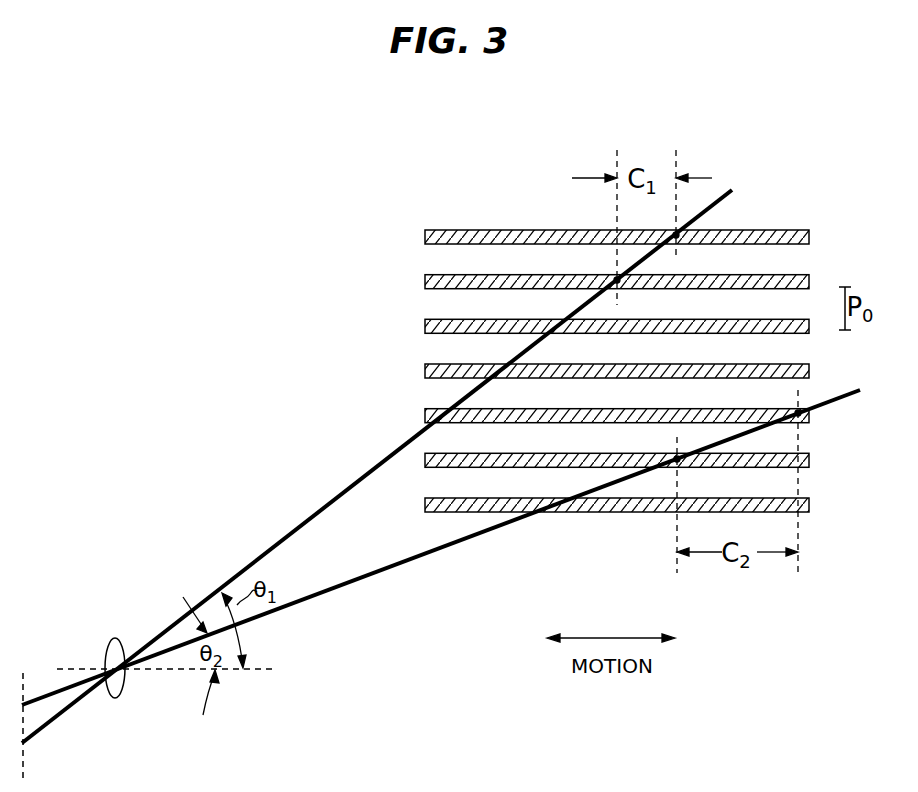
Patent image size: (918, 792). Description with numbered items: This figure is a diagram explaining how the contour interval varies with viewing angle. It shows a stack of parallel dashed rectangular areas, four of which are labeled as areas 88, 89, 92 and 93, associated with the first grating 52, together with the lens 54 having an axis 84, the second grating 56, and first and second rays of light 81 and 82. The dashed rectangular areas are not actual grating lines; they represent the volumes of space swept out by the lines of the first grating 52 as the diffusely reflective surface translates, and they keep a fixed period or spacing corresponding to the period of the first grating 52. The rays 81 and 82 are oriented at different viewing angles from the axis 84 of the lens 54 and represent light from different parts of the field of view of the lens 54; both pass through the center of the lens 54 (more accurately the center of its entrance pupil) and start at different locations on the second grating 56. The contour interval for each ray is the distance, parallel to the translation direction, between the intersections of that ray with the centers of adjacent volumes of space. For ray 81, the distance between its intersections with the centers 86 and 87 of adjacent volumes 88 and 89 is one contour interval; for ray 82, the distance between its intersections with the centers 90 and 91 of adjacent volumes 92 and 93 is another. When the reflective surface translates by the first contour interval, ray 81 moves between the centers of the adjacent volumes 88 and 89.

The first grating 52 is at (486, 136).
The lens 54 is at (113, 640).
The second grating 56 is at (23, 676).
The first ray of light 81 is at (732, 190).
The second ray of light 82 is at (850, 394).
The axis 84 is at (168, 672).
The center 86 is at (678, 238).
The center 87 is at (617, 280).
The dashed rectangular area 88 is at (809, 237).
The dashed rectangular area 89 is at (809, 282).
The center 90 is at (810, 407).
The center 91 is at (677, 459).
The dashed rectangular area 92 is at (810, 418).
The dashed rectangular area 93 is at (810, 458).